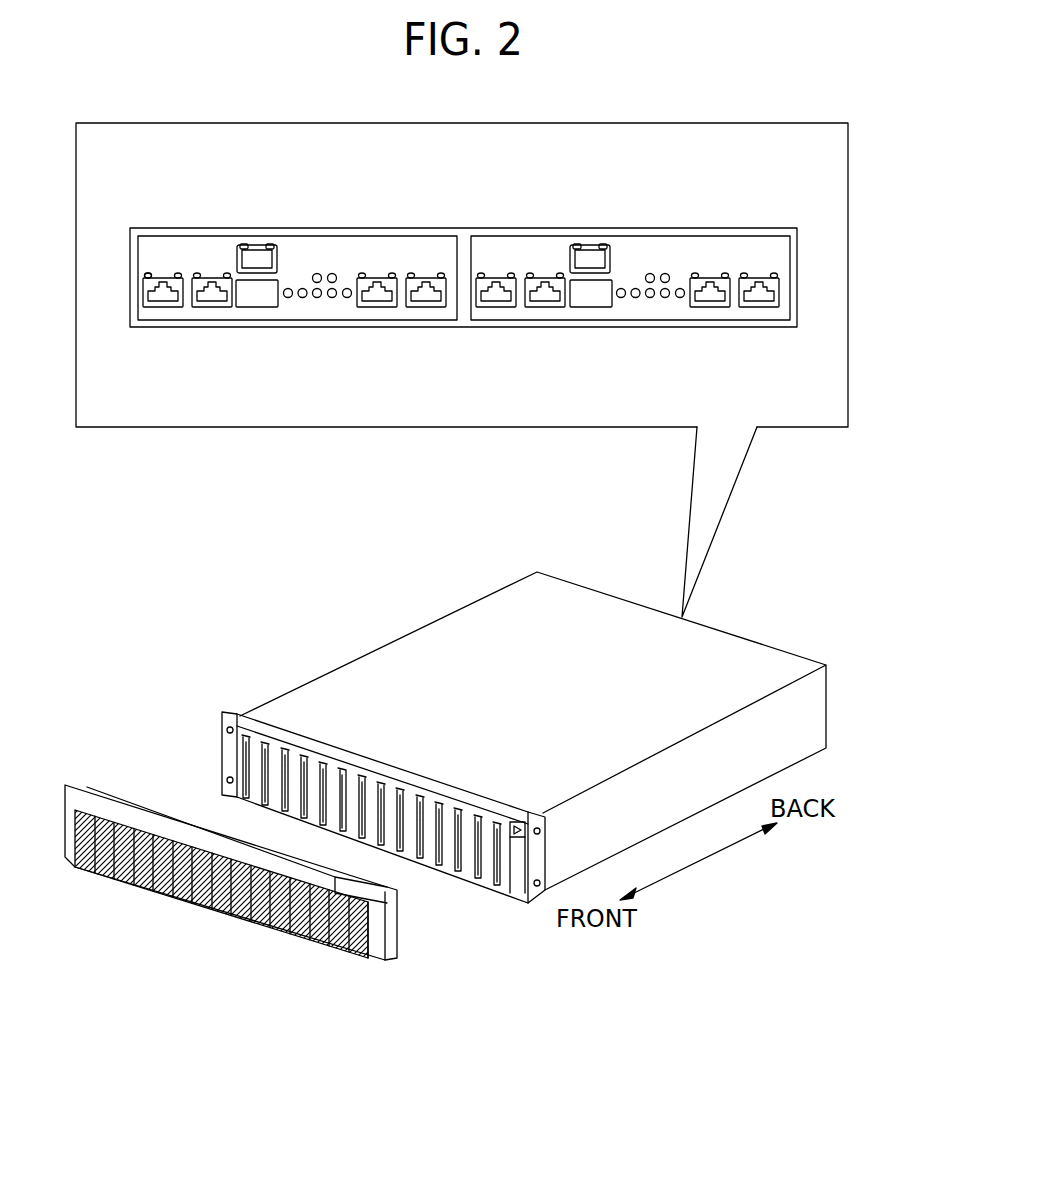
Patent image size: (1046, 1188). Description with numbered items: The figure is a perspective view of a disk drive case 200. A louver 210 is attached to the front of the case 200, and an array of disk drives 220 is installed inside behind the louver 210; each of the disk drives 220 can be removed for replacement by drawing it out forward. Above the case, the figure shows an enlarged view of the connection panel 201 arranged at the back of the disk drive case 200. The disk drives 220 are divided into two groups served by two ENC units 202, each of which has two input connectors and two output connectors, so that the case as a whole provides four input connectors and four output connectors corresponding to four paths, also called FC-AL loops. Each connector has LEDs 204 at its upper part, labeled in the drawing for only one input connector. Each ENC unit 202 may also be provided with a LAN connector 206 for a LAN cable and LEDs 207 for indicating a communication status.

The disk drive case 200 is at (303, 628).
The rear panel 201 is at (205, 228).
The ENC unit 202 is at (320, 236).
The LEDs 204 is at (147, 273).
The LAN connector 206 is at (257, 245).
The LEDs 207 is at (334, 273).
The louver 210 is at (397, 942).
The disk drives 220 is at (223, 740).